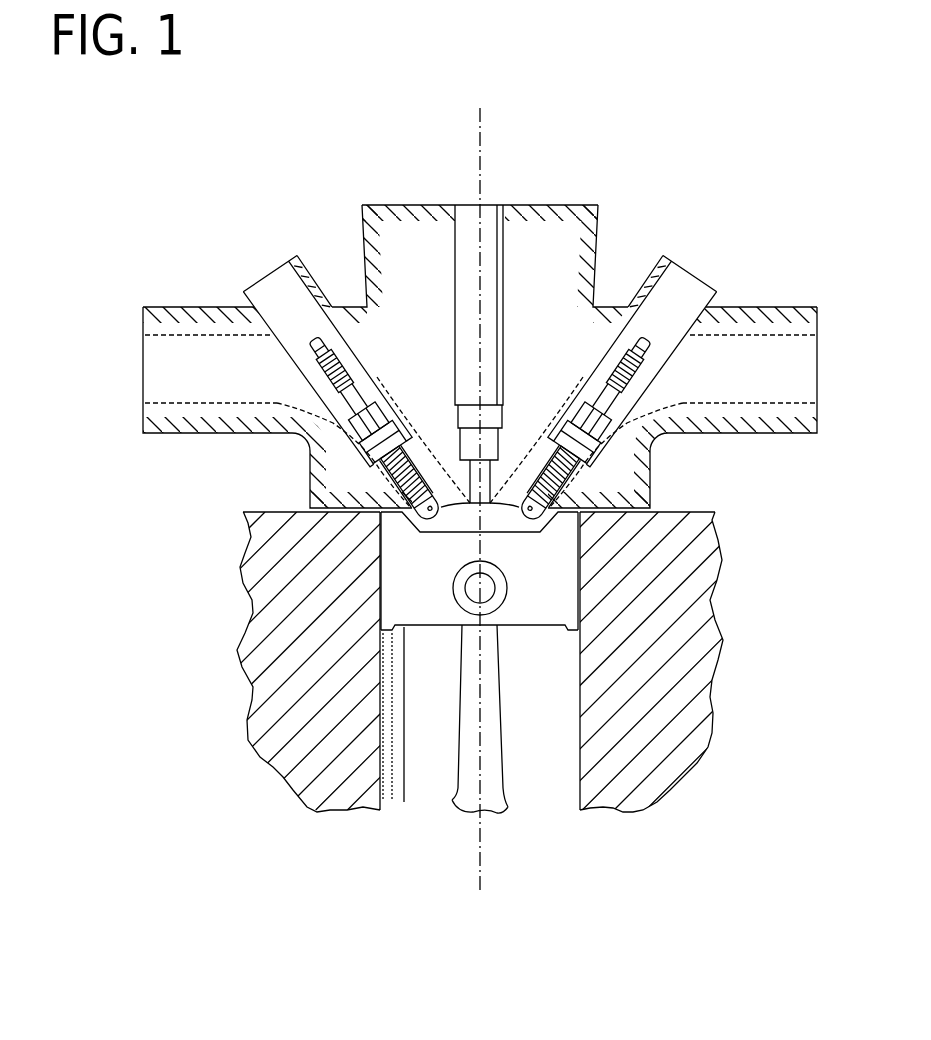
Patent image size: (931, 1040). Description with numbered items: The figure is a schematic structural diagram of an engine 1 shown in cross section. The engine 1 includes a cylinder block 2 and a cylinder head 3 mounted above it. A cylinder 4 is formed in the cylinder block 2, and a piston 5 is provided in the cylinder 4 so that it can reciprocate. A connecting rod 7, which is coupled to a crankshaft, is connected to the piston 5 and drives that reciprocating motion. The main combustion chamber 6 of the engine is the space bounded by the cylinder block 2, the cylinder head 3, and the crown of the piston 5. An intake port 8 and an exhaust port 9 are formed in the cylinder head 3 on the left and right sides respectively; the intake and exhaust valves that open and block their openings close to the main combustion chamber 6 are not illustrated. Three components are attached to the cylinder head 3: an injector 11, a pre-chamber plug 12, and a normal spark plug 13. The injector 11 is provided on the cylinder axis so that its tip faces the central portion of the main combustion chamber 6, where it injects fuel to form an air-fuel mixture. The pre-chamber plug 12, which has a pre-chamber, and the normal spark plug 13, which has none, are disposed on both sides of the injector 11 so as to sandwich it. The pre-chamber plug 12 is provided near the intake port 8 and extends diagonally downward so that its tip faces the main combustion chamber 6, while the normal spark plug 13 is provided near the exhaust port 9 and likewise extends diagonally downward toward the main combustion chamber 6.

The engine 1 is at (411, 160).
The cylinder block 2 is at (263, 688).
The cylinder head 3 is at (199, 426).
The cylinder 4 is at (383, 807).
The piston 5 is at (419, 627).
The main combustion chamber 6 is at (452, 520).
The connecting rod 7 is at (452, 799).
The intake port 8 is at (190, 350).
The exhaust port 9 is at (770, 350).
The injector 11 is at (502, 194).
The pre-chamber plug 12 is at (306, 326).
The normal spark plug 13 is at (654, 326).